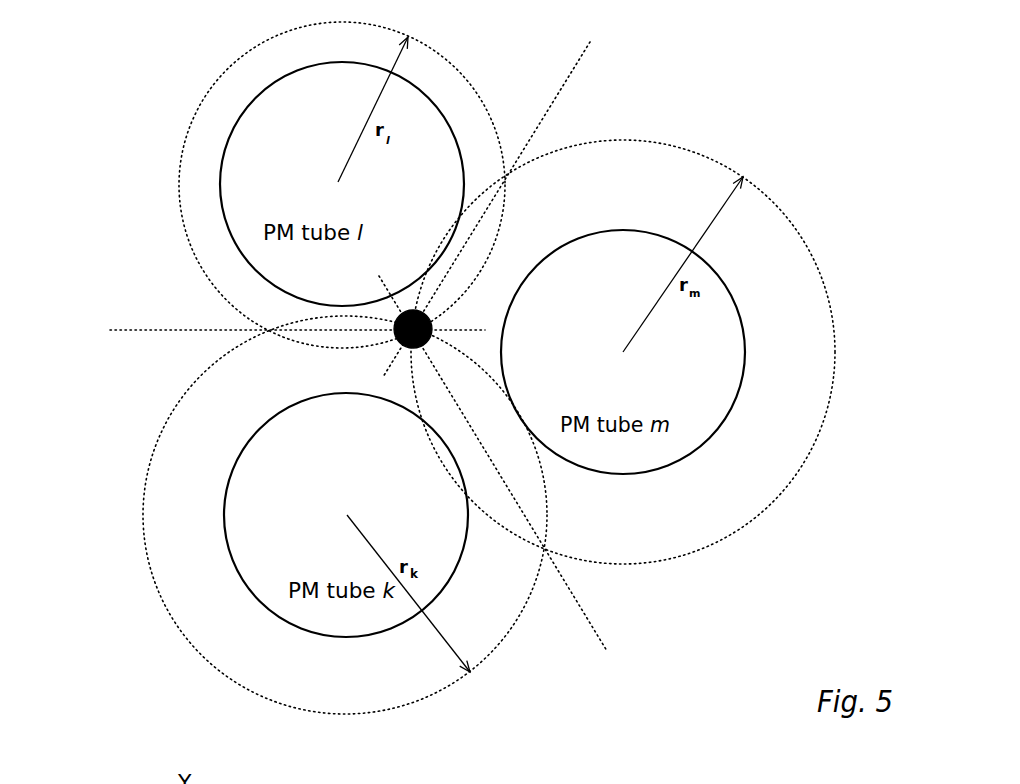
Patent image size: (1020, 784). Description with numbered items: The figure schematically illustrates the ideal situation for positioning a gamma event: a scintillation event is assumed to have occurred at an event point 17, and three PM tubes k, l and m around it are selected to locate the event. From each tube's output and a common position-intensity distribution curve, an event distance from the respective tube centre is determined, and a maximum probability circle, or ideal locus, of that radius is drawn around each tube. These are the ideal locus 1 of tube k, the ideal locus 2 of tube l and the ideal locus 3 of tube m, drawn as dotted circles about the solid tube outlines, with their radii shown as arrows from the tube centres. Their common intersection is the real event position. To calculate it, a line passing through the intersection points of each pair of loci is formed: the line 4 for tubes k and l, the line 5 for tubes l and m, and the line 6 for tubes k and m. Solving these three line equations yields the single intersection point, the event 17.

The ideal locus of PM tube k 1 is at (148, 482).
The ideal locus of PM tube l 2 is at (203, 90).
The ideal locus of PM tube m 3 is at (643, 143).
The line passing intersection points of loci of tubes k and l 4 is at (160, 332).
The line passing intersection points of loci of tubes l and m 5 is at (543, 127).
The line passing intersection points of loci of tubes k and m 6 is at (593, 625).
The scintillation event point 17 is at (402, 342).